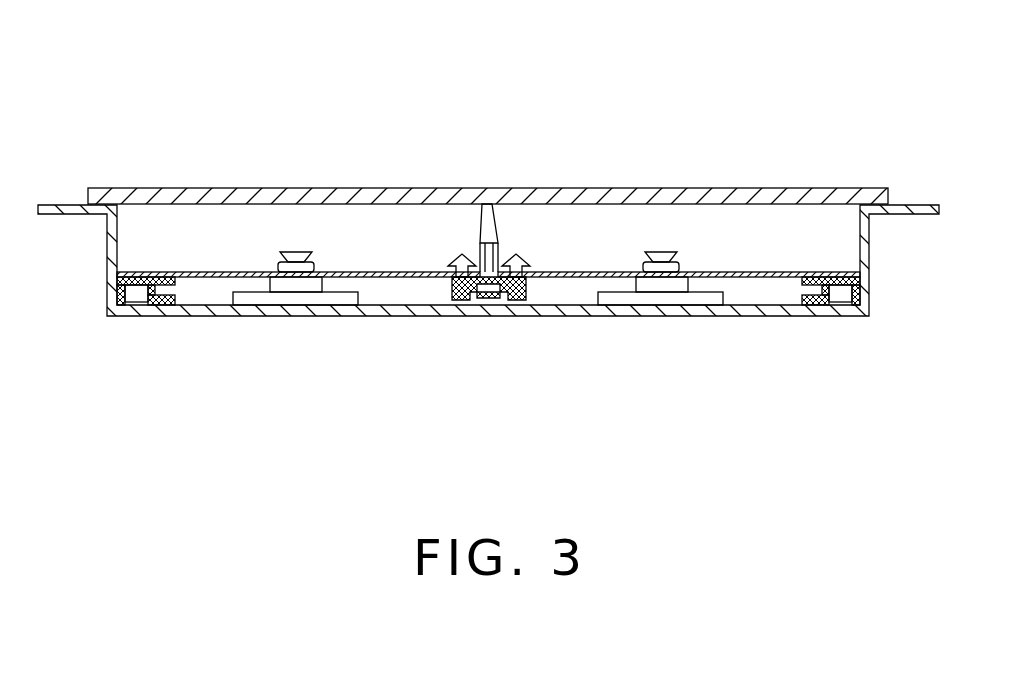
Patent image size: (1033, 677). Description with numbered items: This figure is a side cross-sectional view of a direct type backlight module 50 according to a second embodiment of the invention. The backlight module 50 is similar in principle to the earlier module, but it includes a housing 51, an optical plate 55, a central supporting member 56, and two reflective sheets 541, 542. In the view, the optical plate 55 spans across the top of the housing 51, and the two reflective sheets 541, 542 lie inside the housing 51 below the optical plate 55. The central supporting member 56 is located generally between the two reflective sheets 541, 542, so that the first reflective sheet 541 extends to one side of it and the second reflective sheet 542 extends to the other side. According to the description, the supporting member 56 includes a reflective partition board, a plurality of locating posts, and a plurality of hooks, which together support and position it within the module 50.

The direct type backlight module 50 is at (512, 36).
The housing 51 is at (863, 263).
The optical plate 55 is at (597, 197).
The reflective sheet 541 is at (420, 277).
The reflective sheet 542 is at (563, 277).
The central supporting member 56 is at (453, 292).